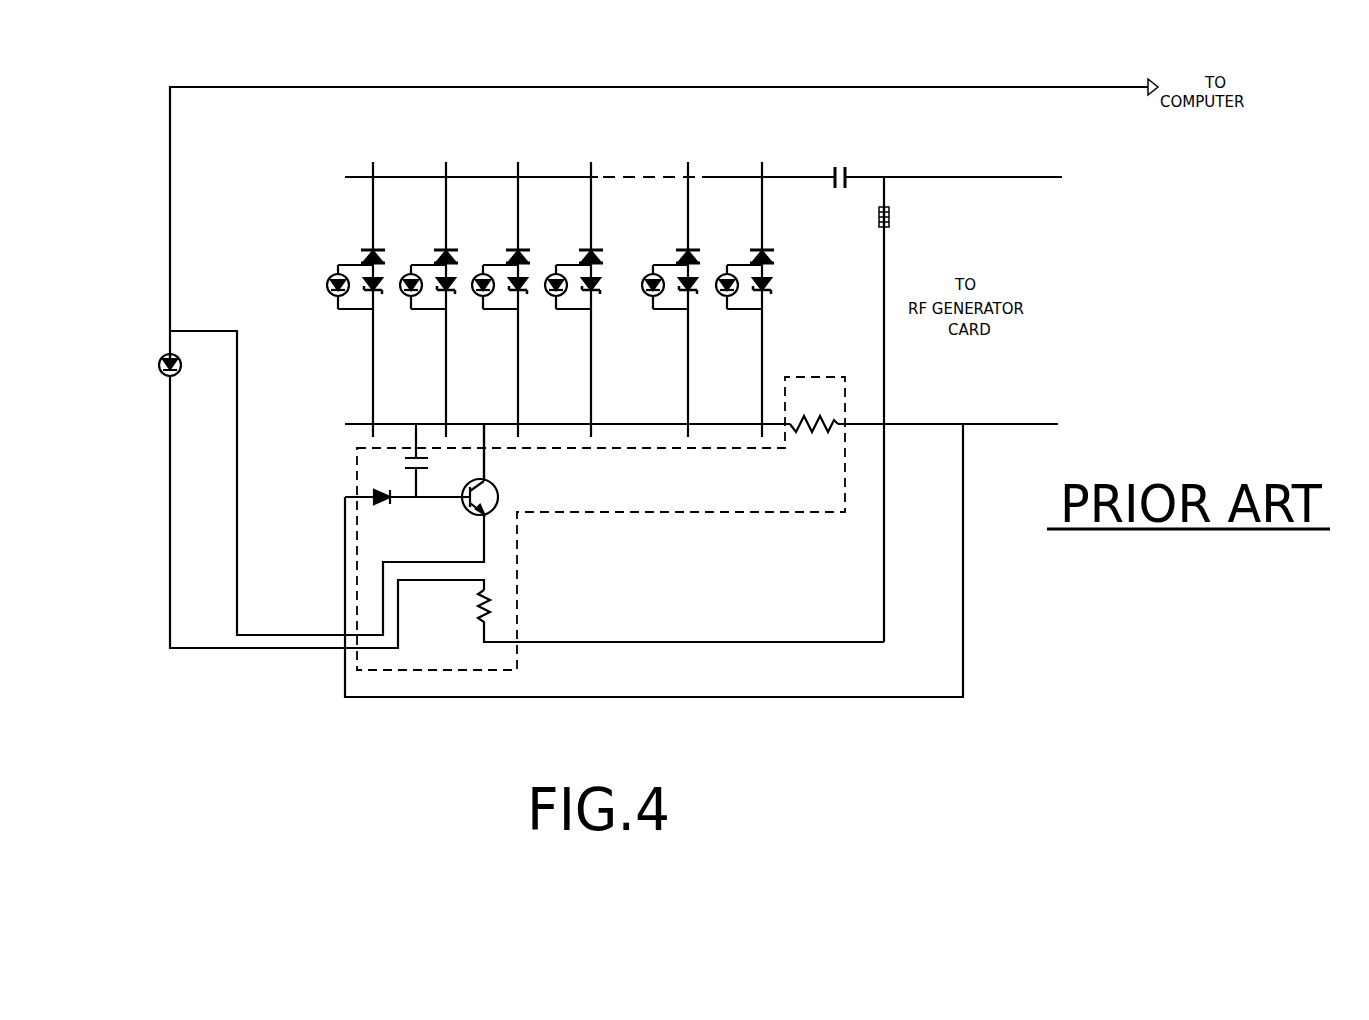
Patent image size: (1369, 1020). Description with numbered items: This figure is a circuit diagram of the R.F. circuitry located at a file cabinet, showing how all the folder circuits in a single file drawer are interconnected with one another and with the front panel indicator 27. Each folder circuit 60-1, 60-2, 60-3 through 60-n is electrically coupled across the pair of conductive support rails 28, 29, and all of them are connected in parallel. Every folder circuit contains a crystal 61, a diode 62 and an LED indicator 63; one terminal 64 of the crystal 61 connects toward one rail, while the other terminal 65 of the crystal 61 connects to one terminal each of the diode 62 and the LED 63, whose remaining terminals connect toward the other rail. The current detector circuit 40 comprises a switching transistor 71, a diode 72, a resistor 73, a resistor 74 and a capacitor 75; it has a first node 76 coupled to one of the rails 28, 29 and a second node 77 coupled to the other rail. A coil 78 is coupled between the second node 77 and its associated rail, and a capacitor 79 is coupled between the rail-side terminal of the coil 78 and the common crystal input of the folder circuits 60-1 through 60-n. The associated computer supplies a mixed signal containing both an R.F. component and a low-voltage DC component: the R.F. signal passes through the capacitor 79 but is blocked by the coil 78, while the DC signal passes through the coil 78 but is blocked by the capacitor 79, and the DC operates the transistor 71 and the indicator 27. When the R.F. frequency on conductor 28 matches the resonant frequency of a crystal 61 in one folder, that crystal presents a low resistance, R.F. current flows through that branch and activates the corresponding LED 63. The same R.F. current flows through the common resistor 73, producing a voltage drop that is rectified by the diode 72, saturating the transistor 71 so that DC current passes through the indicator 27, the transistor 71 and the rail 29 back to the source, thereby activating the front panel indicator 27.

The front panel indicator 27 is at (162, 368).
The conductive support rail 28 is at (808, 176).
The conductive support rail 29 is at (775, 426).
The current detector circuit 40 is at (521, 560).
The folder circuit 60-1 is at (307, 295).
The folder circuit 60-2 is at (422, 257).
The folder circuit 60-3 is at (495, 257).
The folder circuit 60-n is at (733, 257).
The crystal 61 is at (364, 246).
The diode 62 is at (355, 290).
The LED indicator 63 is at (378, 266).
The terminal of crystal 64 is at (370, 213).
The terminal of crystal 65 is at (307, 327).
The switching transistor 71 is at (500, 495).
The diode 72 is at (407, 523).
The resistor 73 is at (806, 420).
The resistor 74 is at (489, 607).
The capacitor 75 is at (400, 466).
The first node 76 is at (488, 433).
The second node 77 is at (655, 640).
The coil 78 is at (893, 215).
The capacitor 79 is at (846, 168).